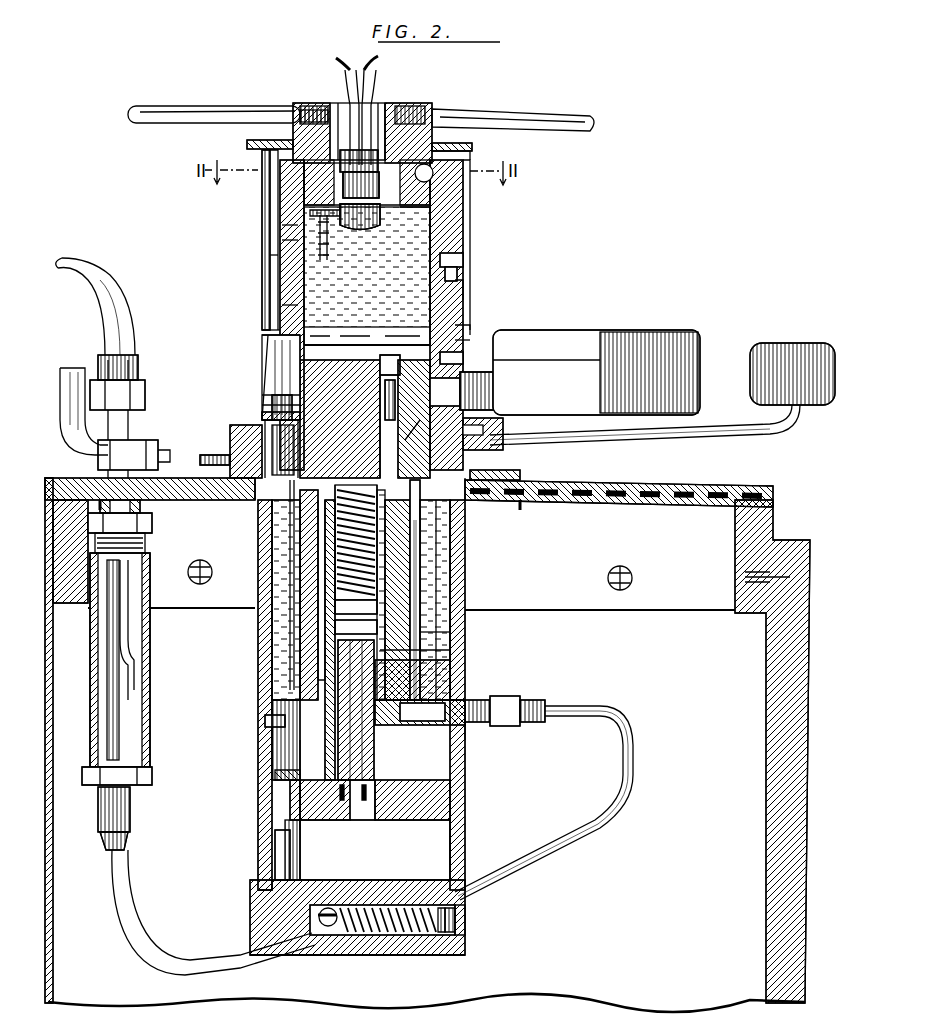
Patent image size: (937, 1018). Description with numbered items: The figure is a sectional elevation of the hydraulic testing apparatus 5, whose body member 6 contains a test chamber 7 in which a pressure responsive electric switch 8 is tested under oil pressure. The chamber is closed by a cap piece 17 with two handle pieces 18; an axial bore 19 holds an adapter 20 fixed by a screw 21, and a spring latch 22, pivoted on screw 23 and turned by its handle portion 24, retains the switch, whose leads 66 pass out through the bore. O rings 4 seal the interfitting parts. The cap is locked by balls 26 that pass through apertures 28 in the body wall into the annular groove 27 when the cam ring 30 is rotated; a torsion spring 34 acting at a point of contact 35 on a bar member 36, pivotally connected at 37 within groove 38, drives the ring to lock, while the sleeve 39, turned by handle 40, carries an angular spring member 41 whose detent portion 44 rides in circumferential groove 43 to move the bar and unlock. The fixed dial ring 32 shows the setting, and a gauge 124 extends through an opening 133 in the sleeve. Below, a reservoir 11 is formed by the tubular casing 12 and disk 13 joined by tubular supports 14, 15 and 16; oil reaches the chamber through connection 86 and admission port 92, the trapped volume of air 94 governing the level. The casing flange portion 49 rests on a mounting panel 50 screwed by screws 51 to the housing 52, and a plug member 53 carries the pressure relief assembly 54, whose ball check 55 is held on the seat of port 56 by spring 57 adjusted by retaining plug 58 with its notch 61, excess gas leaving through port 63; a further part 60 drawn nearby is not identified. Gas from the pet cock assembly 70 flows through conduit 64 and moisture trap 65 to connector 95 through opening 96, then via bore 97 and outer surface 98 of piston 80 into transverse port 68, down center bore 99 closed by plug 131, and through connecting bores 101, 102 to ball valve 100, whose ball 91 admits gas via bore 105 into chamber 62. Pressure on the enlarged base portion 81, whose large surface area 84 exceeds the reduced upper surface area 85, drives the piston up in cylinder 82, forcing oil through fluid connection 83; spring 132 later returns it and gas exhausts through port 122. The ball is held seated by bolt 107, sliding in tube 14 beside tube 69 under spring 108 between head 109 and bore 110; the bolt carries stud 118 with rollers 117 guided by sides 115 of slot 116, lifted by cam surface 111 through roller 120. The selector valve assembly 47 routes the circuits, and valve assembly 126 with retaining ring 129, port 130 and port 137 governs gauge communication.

The O rings 4 is at (265, 197).
The hydraulic testing apparatus 5 is at (250, 936).
The body member 6 is at (440, 312).
The test chamber 7 is at (300, 288).
The pressure responsive electric switch 8 is at (360, 217).
The reservoir 11 is at (452, 568).
The tubular casing 12 is at (460, 628).
The disk 13 is at (450, 675).
The tubular support 14 is at (272, 592).
The tubular support 15 is at (272, 648).
The tubular support 16 is at (452, 592).
The cap piece 17 is at (410, 103).
The handle pieces 18 is at (165, 105).
The axial bore 19 is at (343, 105).
The adapter 20 is at (366, 148).
The screw 21 is at (393, 103).
The spring latch 22 is at (361, 185).
The screw 23 is at (460, 214).
The handle portion 24 is at (460, 249).
The balls 26 is at (433, 170).
The annular groove 27 is at (300, 118).
The apertures 28 is at (465, 189).
The cam ring 30 is at (455, 157).
The fixed dial ring 32 is at (470, 143).
The torsion spring 34 is at (290, 224).
The point of contact 35 is at (278, 307).
The bar member 36 is at (270, 257).
The pivotal connection 37 is at (262, 153).
The groove 38 is at (262, 174).
The sleeve 39 is at (460, 232).
The handle 40 is at (700, 445).
The angular spring member 41 is at (463, 272).
The circumferential groove 43 is at (462, 290).
The detent portion 44 is at (478, 255).
The selector valve assembly 47 is at (483, 424).
The flange portion 49 is at (522, 478).
The mounting panel 50 is at (630, 502).
The screws 51 is at (208, 500).
The housing 52 is at (790, 826).
The plug member 53 is at (252, 910).
The pressure relief assembly 54 is at (346, 935).
The ball check 55 is at (312, 942).
The port 56 is at (312, 880).
The spring 57 is at (408, 935).
The adjustable retaining plug 58 is at (455, 935).
The spring 60 is at (372, 935).
The notch 61 is at (430, 935).
The gas chamber 62 is at (445, 842).
The port 63 is at (326, 935).
The fluid conduit 64 is at (590, 855).
The moisture trap 65 is at (159, 688).
The leads 66 is at (376, 72).
The transverse port 68 is at (385, 641).
The tube 69 is at (290, 750).
The pet cock assembly 70 is at (147, 425).
The piston 80 is at (375, 764).
The enlarged base portion 81 is at (415, 795).
The cylinder 82 is at (275, 545).
The fluid connection 83 is at (364, 372).
The large surface area 84 is at (395, 820).
The reduced upper surface area 85 is at (378, 604).
The connection 86 is at (300, 361).
The ball 91 is at (268, 790).
The admission port 92 is at (290, 241).
The volume of air 94 is at (300, 214).
The connector 95 is at (500, 698).
The opening 96 is at (462, 738).
The bore 97 is at (420, 725).
The outer surface 98 is at (455, 655).
The center bore 99 is at (360, 775).
The ball valve 100 is at (285, 772).
The connecting bore 101 is at (342, 800).
The connecting bore 102 is at (300, 835).
The bore 105 is at (285, 820).
The bolt 107 is at (266, 449).
The spring 108 is at (275, 568).
The head 109 is at (275, 615).
The bore 110 is at (251, 458).
The cam surface 111 is at (265, 383).
The sides 115 is at (285, 350).
The slot 116 is at (275, 328).
The rollers 117 is at (288, 395).
The stud 118 is at (265, 411).
The roller 120 is at (268, 400).
The port 122 is at (262, 730).
The gauge 124 is at (600, 340).
The valve assembly 126 is at (392, 355).
The retaining ring 129 is at (458, 344).
The port 130 is at (480, 391).
The plug 131 is at (364, 800).
The spring 132 is at (455, 550).
The opening 133 is at (462, 328).
The port 137 is at (463, 358).